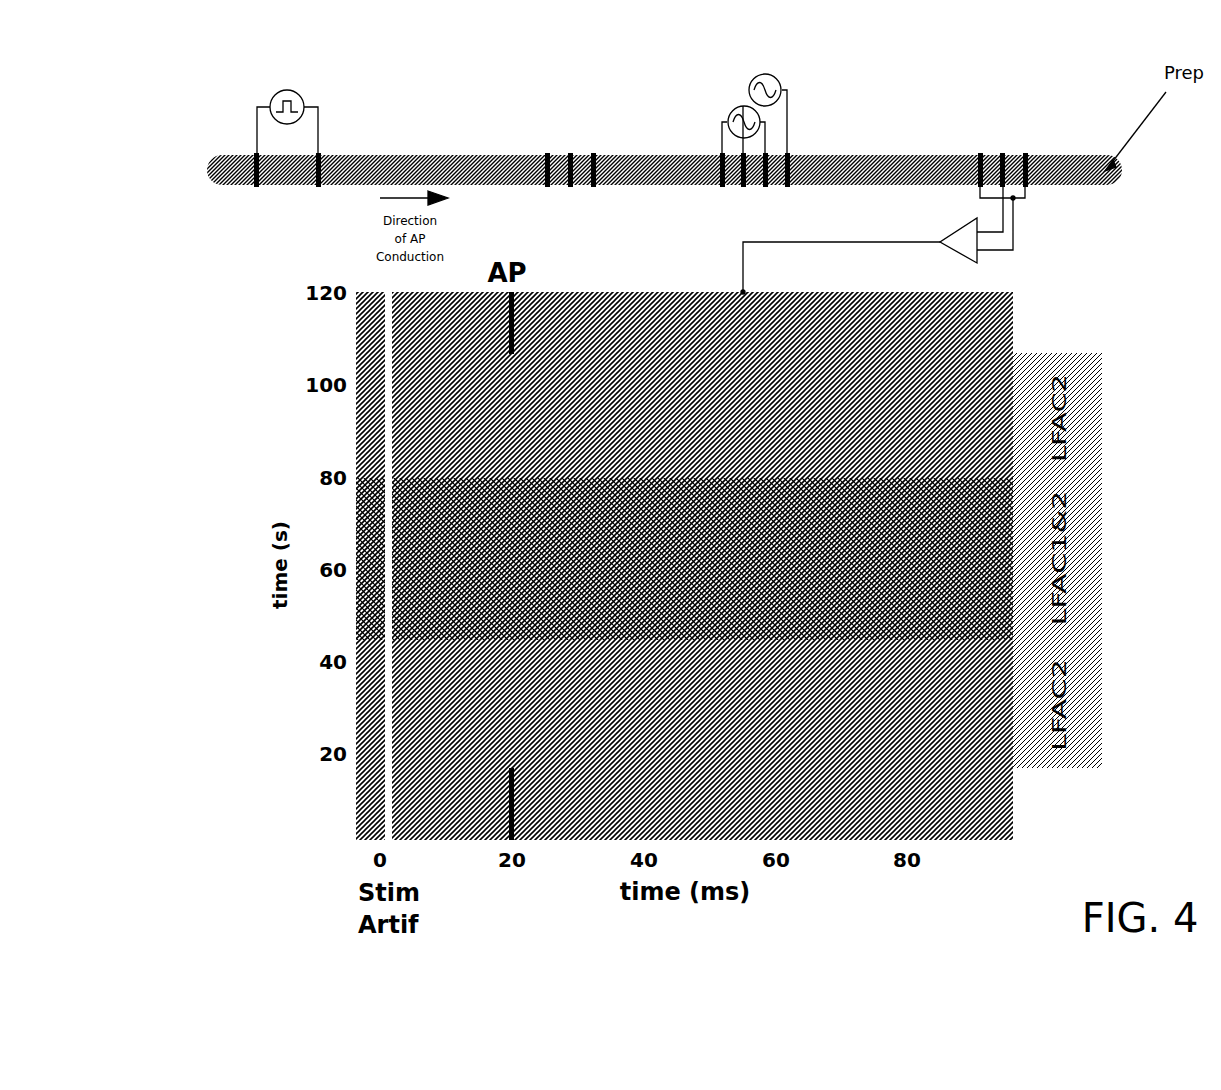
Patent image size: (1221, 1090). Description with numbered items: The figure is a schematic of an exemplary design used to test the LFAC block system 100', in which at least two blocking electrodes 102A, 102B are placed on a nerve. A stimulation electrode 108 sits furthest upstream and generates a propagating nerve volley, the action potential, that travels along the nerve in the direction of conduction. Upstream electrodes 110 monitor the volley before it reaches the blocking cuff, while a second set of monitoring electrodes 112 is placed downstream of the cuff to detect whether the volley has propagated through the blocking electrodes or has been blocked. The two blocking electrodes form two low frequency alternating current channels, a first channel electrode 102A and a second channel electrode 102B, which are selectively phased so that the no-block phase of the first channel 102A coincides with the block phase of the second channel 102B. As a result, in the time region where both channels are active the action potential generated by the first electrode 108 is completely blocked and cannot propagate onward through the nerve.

The LFAC block system 100' is at (633, 124).
The stimulation electrode 108 is at (338, 161).
The upstream electrodes 110 is at (562, 153).
The downstream monitoring electrodes 112 is at (965, 155).
The blocking electrode LFAC1 102A is at (741, 106).
The blocking electrode LFAC2 102B is at (762, 74).